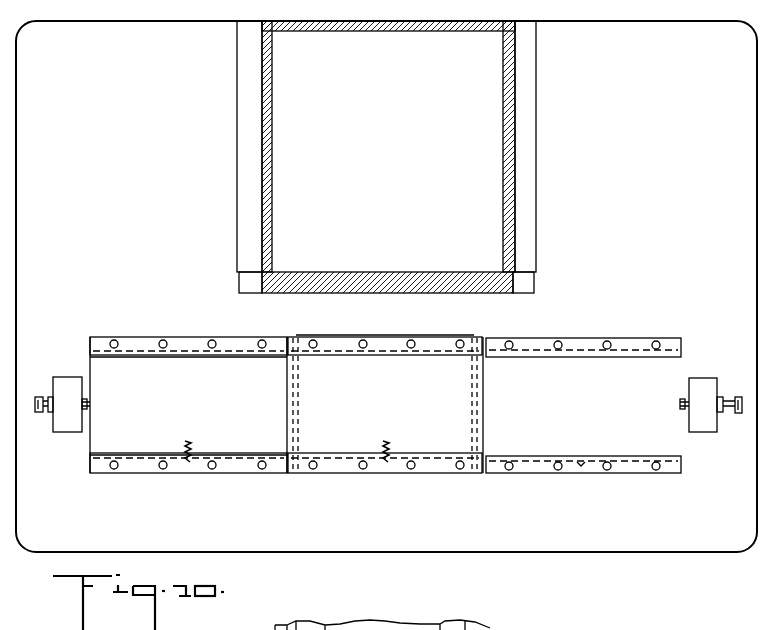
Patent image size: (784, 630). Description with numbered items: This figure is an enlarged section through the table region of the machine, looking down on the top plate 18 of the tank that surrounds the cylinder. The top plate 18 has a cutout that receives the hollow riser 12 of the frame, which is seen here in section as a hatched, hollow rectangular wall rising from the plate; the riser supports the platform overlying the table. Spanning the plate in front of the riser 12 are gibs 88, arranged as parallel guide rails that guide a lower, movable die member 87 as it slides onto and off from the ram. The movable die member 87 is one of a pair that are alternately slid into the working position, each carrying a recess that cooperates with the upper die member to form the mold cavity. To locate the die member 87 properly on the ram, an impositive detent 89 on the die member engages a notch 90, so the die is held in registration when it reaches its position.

The hollow riser 12 is at (273, 242).
The top plate 18 is at (386, 286).
The second or movable die member 87 is at (482, 422).
The gibs 88 is at (586, 343).
The impositive detent 89 is at (387, 463).
The notch 90 is at (382, 462).